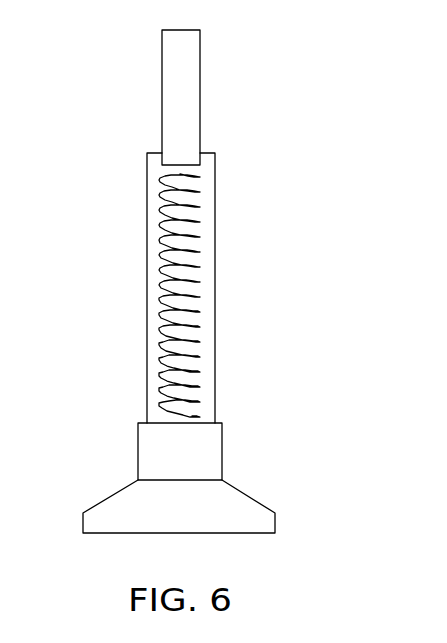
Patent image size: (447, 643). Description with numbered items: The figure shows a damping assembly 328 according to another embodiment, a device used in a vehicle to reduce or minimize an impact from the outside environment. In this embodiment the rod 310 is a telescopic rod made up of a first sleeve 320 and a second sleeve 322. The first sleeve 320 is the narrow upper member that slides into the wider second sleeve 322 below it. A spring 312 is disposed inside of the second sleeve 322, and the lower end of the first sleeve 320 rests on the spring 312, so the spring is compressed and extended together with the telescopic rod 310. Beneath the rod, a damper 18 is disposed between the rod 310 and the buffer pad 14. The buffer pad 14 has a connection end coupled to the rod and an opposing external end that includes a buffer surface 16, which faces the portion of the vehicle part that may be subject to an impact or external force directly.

The damping assembly 328 is at (252, 77).
The first sleeve 320 is at (192, 128).
The rod 310 is at (216, 275).
The spring 312 is at (201, 334).
The second sleeve 322 is at (215, 371).
The damper 18 is at (200, 443).
The buffer pad 14 is at (245, 493).
The buffer surface 16 is at (243, 533).